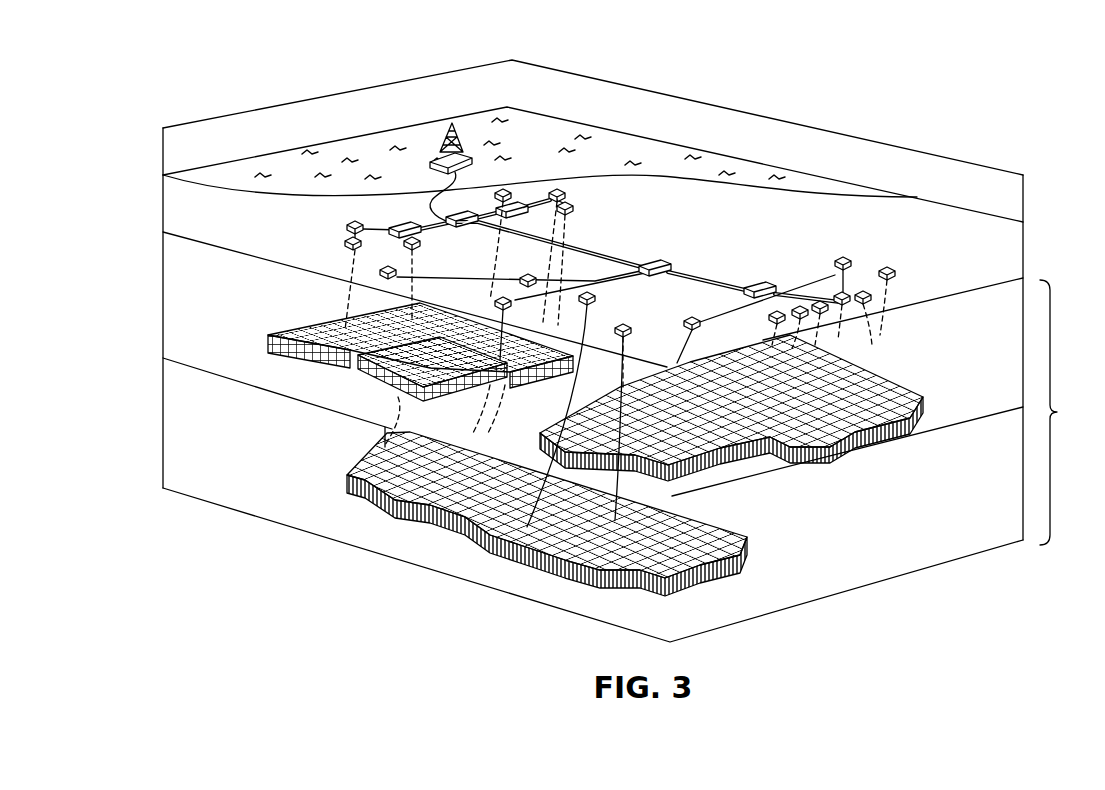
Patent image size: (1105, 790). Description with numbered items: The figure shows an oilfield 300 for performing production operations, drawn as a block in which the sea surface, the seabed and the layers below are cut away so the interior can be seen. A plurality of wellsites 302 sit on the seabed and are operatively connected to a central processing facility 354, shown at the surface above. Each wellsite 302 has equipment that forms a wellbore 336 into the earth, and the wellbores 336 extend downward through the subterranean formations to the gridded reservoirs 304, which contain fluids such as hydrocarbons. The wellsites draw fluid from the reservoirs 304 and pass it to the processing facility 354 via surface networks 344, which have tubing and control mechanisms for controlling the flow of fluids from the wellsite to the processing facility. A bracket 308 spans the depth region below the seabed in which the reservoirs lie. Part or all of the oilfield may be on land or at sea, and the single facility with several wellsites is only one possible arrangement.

The oilfield 300 is at (215, 90).
The wellsite 302 is at (704, 304).
The reservoir 304 is at (838, 462).
The subsurface region 308 is at (1064, 412).
The wellbore 336 is at (893, 328).
The surface network 344 is at (380, 243).
The central processing facility 354 is at (436, 137).